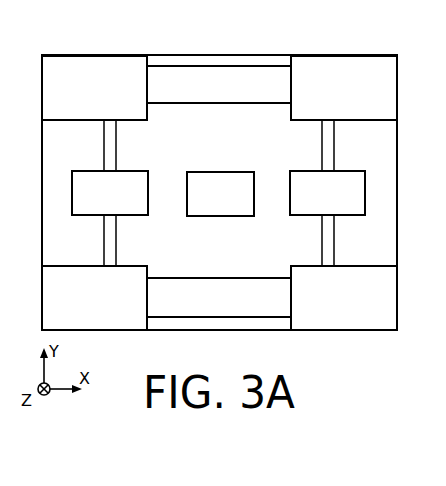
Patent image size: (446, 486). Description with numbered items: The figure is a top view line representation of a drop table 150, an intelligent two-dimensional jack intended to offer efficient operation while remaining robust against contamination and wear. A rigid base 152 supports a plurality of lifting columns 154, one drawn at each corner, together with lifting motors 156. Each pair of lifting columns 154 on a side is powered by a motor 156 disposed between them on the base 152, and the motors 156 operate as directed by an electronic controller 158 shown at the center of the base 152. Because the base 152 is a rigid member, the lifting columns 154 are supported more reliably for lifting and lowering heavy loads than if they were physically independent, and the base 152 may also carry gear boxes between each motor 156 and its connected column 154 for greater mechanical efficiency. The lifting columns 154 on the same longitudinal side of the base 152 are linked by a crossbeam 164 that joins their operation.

The drop table 150 is at (70, 30).
The base 152 is at (218, 55).
The lifting column 154 is at (75, 98).
The lifting motor 156 is at (90, 202).
The electronic controller 158 is at (201, 202).
The crossbeam 164 is at (199, 96).